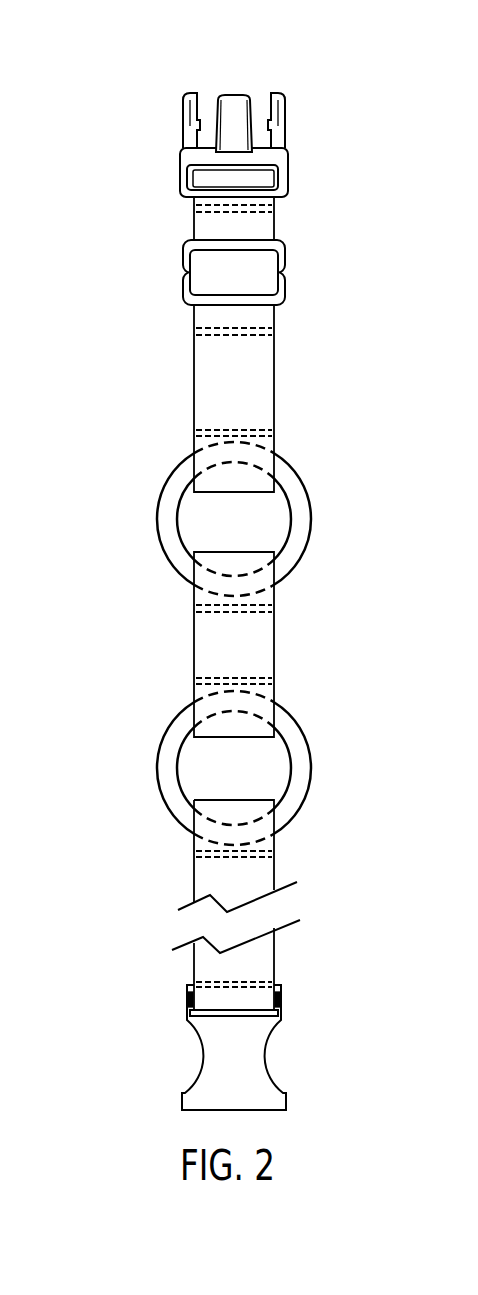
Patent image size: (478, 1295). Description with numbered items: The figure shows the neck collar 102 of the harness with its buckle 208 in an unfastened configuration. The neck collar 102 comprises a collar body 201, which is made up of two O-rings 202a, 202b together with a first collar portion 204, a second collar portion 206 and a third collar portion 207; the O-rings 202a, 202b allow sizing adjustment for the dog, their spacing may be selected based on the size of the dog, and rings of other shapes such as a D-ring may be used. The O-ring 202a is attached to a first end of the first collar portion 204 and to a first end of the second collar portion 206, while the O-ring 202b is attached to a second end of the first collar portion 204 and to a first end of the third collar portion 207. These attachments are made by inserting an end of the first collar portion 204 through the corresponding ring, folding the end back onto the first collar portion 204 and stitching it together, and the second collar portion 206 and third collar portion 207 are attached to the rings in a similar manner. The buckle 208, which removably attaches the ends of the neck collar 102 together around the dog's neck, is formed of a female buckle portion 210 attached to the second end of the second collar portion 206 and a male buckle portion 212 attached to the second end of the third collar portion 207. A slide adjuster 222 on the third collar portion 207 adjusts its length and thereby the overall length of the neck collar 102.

The neck collar 102 is at (118, 28).
The buckle 208 is at (178, 112).
The male buckle portion 212 is at (180, 177).
The slide adjuster 222 is at (182, 283).
The third collar portion 207 is at (193, 372).
The O-ring 202b is at (312, 510).
The first collar portion 204 is at (275, 638).
The O-ring 202a is at (308, 775).
The second collar portion 206 is at (275, 862).
The collar body 201 is at (193, 880).
The female buckle portion 210 is at (188, 1002).